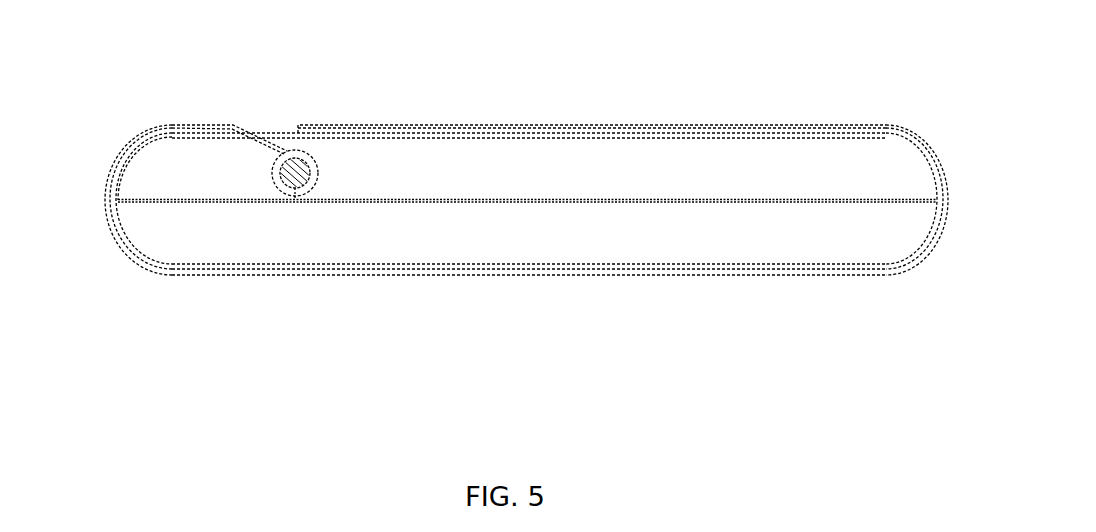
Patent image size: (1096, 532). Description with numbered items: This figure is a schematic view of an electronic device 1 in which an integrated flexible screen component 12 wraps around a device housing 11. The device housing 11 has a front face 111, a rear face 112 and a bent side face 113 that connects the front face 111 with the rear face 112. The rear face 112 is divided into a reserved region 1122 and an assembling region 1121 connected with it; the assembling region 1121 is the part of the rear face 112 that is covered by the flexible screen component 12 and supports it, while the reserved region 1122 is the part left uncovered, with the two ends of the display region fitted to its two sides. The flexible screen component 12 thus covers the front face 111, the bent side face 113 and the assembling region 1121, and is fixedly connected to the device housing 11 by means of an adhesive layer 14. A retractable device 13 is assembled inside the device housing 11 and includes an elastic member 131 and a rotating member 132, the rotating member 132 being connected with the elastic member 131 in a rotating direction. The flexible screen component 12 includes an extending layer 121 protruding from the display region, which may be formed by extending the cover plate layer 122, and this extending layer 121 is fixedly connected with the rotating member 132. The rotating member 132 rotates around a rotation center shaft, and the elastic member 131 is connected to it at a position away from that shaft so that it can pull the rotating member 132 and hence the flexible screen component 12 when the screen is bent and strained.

The electronic device 1 is at (210, 49).
The device housing 11 is at (718, 402).
The front face 111 is at (478, 267).
The rear face 112 is at (740, 358).
The assembling region 1121 is at (522, 138).
The reserved region 1122 is at (285, 133).
The bent side face 113 is at (123, 230).
The flexible screen component 12 is at (717, 130).
The extending layer 121 is at (247, 128).
The cover plate layer 122 is at (200, 125).
The retractable device 13 is at (73, 93).
The elastic member 131 is at (293, 198).
The rotating member 132 is at (283, 175).
The adhesive layer 14 is at (625, 140).